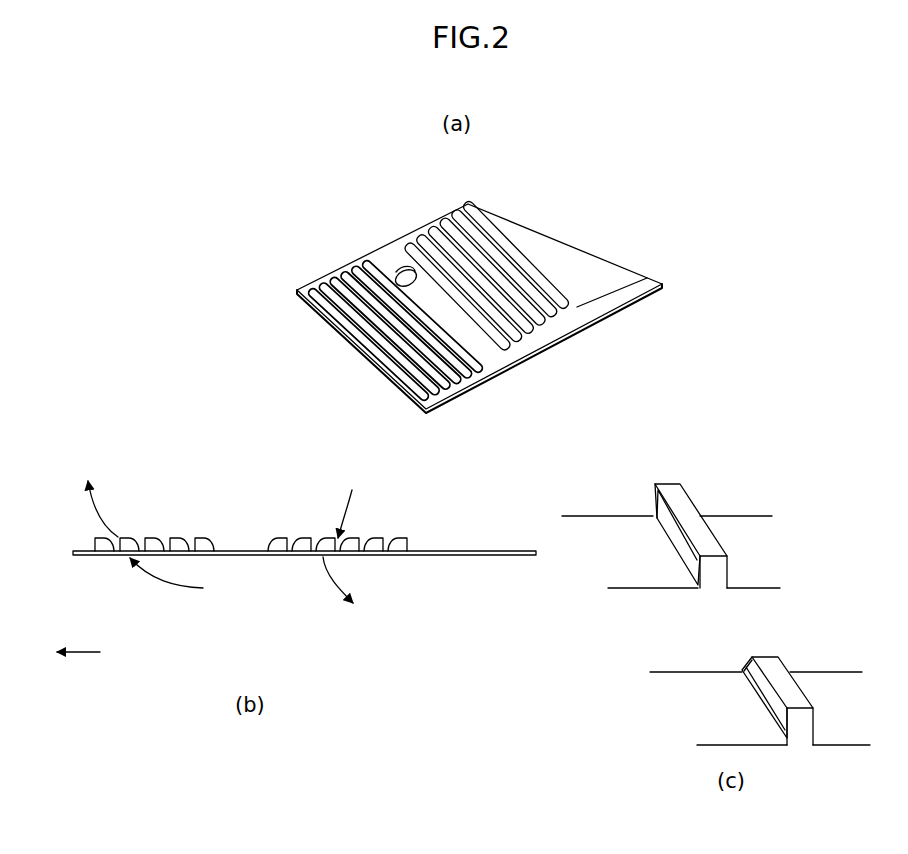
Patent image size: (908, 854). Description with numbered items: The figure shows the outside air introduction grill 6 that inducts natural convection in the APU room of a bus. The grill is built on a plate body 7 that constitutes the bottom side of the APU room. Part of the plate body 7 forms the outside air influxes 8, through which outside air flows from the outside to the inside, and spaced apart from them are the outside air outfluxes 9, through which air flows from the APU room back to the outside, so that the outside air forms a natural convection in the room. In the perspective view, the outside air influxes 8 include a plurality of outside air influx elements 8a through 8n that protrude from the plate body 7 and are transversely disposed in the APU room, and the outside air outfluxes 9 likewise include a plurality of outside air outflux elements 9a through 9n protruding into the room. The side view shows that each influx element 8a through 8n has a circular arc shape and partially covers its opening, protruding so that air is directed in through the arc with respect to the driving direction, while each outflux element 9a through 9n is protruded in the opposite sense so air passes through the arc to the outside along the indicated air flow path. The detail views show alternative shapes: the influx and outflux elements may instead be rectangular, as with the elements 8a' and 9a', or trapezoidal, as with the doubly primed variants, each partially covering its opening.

The outside air introduction grill 6 is at (349, 412).
The plate body 7 is at (383, 262).
The outside air influxes 8 is at (342, 280).
The outside air influx element 8a is at (314, 445).
The outside air influx element 8n is at (333, 315).
The outside air outfluxes 9 is at (433, 233).
The outside air outflux element 9a is at (444, 397).
The outside air outflux element 9n is at (483, 228).
The outside air influx element 8a' is at (671, 501).
The outside air outflux element 9a' is at (671, 501).